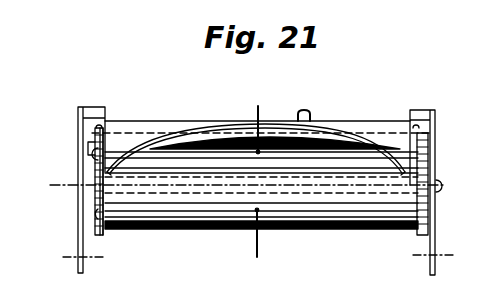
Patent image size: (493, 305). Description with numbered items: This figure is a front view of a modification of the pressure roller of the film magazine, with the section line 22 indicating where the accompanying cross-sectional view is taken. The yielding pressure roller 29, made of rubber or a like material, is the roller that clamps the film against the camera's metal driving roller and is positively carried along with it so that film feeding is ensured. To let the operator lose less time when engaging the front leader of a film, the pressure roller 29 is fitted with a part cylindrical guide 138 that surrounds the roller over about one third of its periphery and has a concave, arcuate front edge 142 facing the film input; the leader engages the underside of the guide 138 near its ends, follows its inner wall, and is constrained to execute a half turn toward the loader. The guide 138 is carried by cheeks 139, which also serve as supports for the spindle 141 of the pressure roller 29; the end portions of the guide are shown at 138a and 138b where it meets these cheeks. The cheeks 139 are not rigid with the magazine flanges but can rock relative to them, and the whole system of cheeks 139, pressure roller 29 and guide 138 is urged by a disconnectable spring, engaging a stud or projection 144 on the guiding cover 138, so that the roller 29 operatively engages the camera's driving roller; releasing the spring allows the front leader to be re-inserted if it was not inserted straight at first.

The section line 22— 22 is at (257, 183).
The pressure roller 29 is at (340, 217).
The part cylindrical guide 138 is at (362, 121).
The right end plate 138a is at (428, 155).
The left end plate 138b is at (97, 164).
The cheeks 139 is at (80, 220).
The spindle 141 is at (80, 185).
The front edge 142 is at (208, 121).
The stud or projection 144 is at (306, 115).